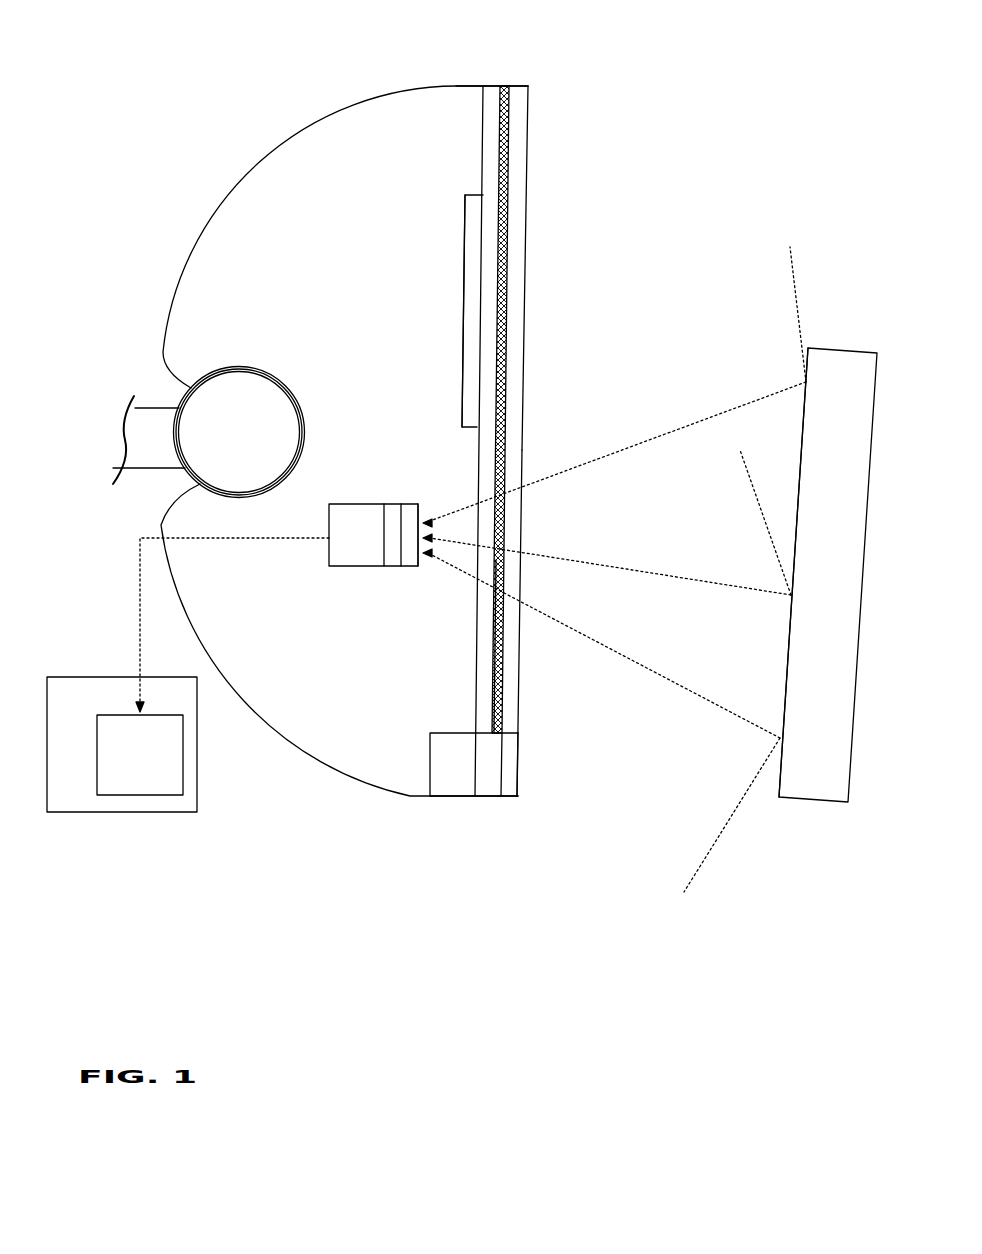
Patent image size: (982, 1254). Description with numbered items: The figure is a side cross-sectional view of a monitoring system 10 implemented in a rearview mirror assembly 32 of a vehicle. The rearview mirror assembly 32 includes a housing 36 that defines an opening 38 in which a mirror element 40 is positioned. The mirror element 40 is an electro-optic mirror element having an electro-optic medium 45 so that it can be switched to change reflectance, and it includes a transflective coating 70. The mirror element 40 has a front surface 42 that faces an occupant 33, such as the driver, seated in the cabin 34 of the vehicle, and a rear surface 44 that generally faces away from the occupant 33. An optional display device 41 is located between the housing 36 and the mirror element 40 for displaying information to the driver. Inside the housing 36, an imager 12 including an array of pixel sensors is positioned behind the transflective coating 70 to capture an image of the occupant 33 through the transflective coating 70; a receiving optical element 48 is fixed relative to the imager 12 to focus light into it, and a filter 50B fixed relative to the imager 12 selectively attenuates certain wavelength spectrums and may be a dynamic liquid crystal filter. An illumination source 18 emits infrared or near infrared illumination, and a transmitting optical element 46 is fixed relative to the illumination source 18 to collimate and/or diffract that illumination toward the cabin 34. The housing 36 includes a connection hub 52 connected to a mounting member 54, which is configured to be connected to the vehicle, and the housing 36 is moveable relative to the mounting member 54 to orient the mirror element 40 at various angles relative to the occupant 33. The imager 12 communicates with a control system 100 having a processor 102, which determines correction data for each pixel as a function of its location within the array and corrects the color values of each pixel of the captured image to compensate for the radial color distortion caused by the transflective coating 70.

The monitoring system 10 is at (760, 200).
The imager 12 is at (350, 553).
The illumination source 18 is at (452, 777).
The rearview mirror assembly 32 is at (532, 86).
The occupant 33 is at (811, 572).
The cabin 34 is at (828, 540).
The housing 36 is at (282, 150).
The opening 38 is at (470, 212).
The mirror element 40 is at (519, 166).
The display device 41 is at (455, 96).
The front surface 42 is at (522, 240).
The rear surface 44 is at (483, 122).
The electro-optic medium 45 is at (507, 300).
The transmitting optical element 46 is at (512, 786).
The receiving optical element 48 is at (392, 553).
The filter 50B is at (407, 500).
The connection hub 52 is at (248, 367).
The mounting member 54 is at (160, 418).
The transflective coating 70 is at (497, 630).
The control system 100 is at (188, 675).
The processor 102 is at (140, 755).